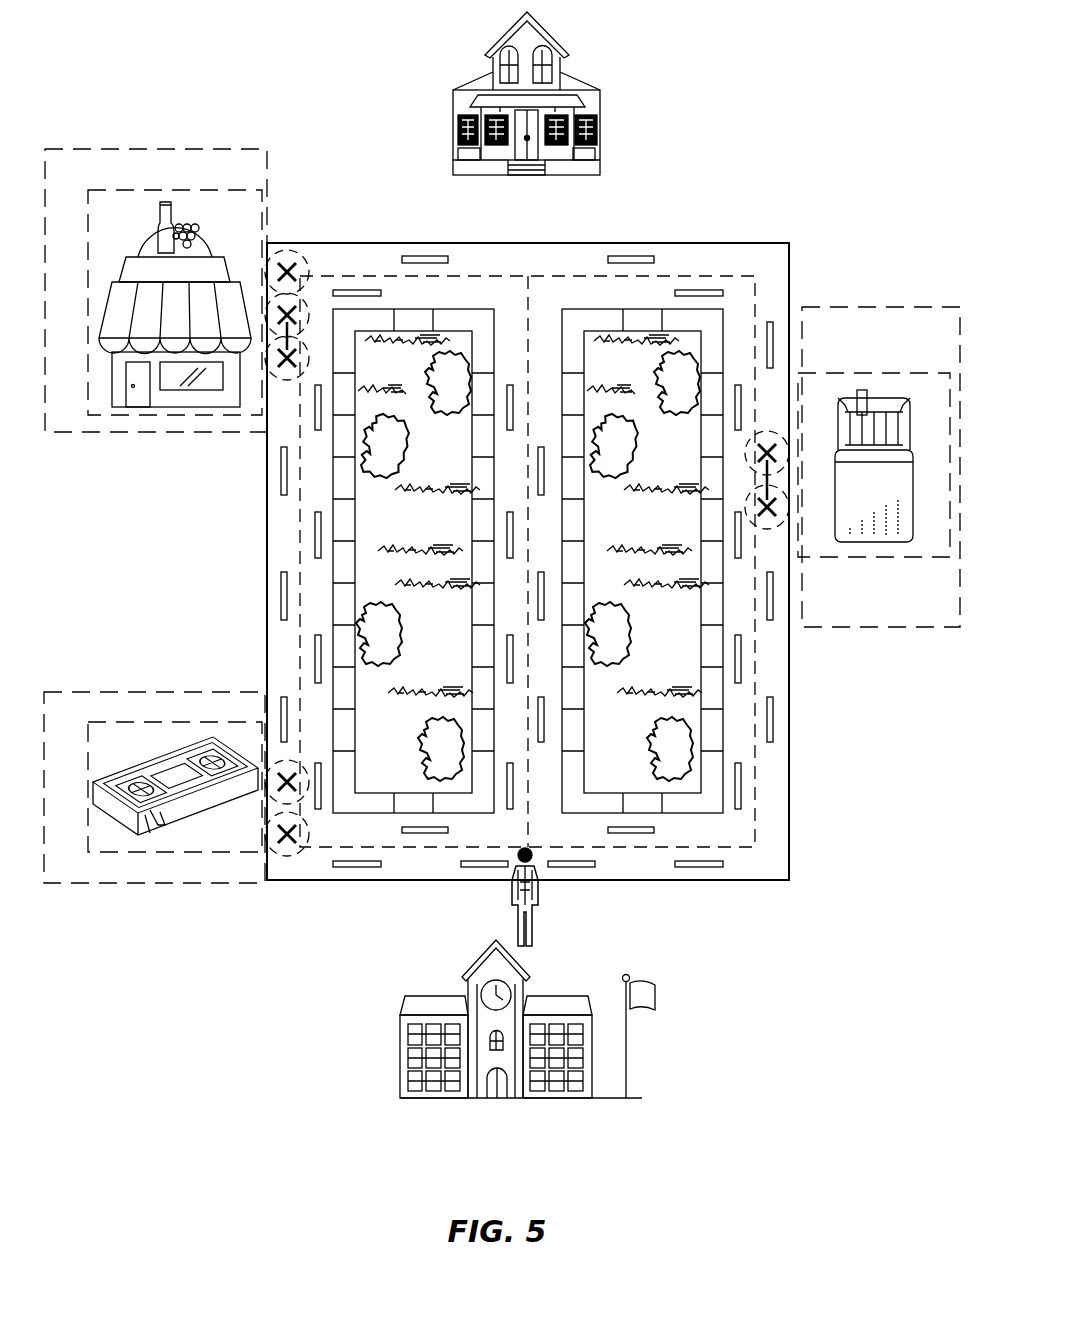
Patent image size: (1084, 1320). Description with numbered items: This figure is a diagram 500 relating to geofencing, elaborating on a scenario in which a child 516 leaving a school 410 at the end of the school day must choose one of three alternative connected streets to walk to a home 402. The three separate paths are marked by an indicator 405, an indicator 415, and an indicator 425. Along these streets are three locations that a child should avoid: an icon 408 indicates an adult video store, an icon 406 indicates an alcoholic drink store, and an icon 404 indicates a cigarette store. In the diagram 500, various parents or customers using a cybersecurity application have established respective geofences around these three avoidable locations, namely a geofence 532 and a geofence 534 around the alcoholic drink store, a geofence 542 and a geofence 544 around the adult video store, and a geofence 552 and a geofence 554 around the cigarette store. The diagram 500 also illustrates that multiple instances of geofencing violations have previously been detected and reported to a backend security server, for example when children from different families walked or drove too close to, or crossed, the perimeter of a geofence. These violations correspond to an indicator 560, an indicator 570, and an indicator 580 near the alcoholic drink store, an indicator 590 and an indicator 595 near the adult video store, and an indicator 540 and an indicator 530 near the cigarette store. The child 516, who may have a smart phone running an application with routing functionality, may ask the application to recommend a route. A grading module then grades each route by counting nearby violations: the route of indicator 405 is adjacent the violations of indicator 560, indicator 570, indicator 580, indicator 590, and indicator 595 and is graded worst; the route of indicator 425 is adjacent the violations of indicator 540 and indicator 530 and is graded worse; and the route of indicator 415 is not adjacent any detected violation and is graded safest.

The diagram 500 is at (168, 62).
The home 402 is at (505, 38).
The icon 404 is at (880, 398).
The indicator 405 is at (300, 550).
The icon 406 is at (175, 204).
The icon 408 is at (180, 745).
The school 410 is at (474, 963).
The indicator 415 is at (527, 590).
The indicator 425 is at (755, 585).
The child 516 is at (538, 883).
The indicator 530 is at (772, 530).
The geofence 532 is at (230, 148).
The geofence 534 is at (130, 416).
The indicator 540 is at (770, 431).
The geofence 542 is at (205, 691).
The geofence 544 is at (118, 853).
The geofence 552 is at (876, 307).
The geofence 554 is at (922, 628).
The indicator 560 is at (290, 247).
The indicator 570 is at (300, 296).
The indicator 580 is at (297, 380).
The indicator 590 is at (300, 762).
The indicator 595 is at (270, 860).